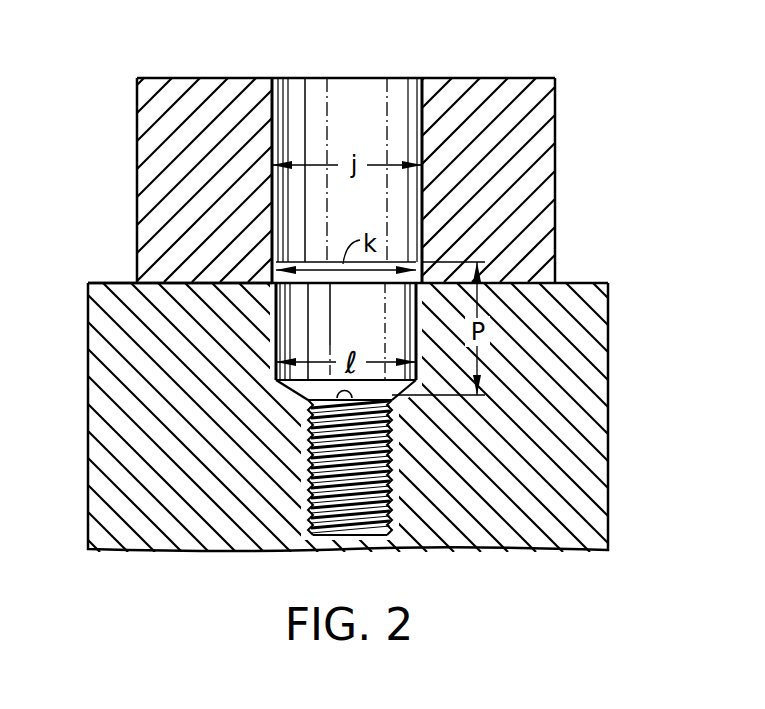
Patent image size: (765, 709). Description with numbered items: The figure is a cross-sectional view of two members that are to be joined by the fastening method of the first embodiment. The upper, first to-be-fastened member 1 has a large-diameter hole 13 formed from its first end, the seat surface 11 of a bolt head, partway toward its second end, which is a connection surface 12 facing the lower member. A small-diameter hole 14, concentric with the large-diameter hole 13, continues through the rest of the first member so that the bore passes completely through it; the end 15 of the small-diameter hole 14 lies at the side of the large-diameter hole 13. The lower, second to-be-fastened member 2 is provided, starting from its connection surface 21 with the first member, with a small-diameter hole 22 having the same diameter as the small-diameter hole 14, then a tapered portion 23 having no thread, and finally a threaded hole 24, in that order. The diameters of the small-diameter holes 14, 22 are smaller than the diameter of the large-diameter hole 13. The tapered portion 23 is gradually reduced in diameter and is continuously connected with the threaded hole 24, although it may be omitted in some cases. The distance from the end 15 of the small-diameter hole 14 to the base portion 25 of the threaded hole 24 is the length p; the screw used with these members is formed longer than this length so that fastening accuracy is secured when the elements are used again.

The to-be-fastened member 1 is at (520, 78).
The seat surface 11 is at (185, 78).
The connection surface 12 is at (146, 284).
The large-diameter hole 13 is at (418, 100).
The small-diameter hole 14 is at (412, 262).
The end of the small-diameter hole 15 is at (300, 258).
The to-be-fastened member 2 is at (608, 342).
The connection surface 21 is at (592, 283).
The small-diameter hole 22 is at (292, 308).
The tapered portion 23 is at (306, 398).
The threaded hole 24 is at (362, 483).
The base portion 25 is at (336, 400).